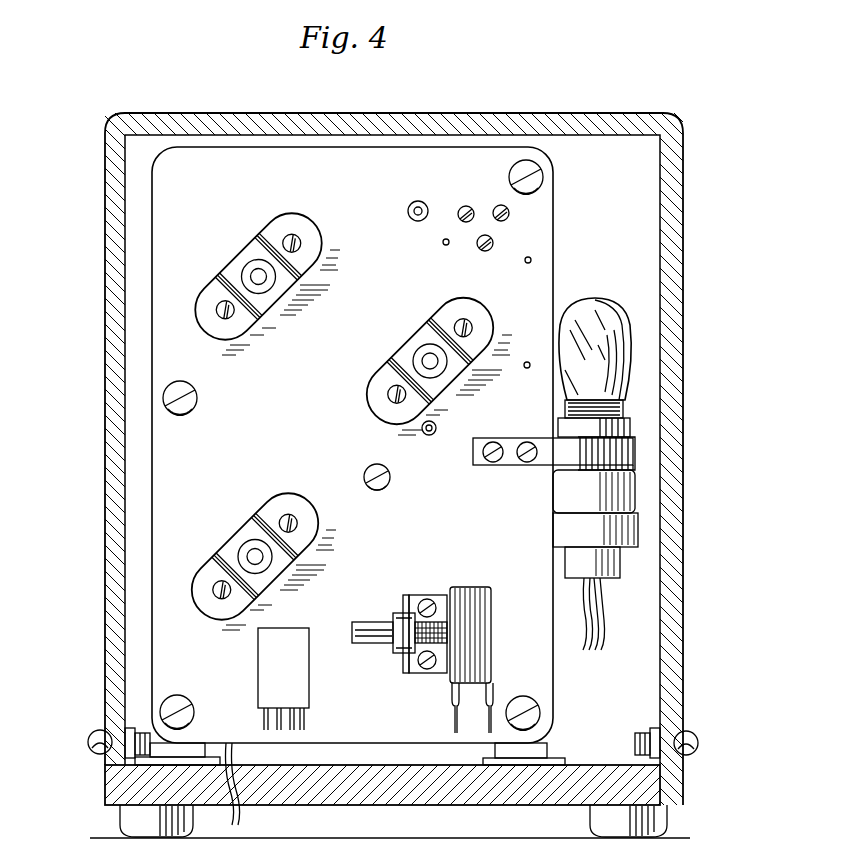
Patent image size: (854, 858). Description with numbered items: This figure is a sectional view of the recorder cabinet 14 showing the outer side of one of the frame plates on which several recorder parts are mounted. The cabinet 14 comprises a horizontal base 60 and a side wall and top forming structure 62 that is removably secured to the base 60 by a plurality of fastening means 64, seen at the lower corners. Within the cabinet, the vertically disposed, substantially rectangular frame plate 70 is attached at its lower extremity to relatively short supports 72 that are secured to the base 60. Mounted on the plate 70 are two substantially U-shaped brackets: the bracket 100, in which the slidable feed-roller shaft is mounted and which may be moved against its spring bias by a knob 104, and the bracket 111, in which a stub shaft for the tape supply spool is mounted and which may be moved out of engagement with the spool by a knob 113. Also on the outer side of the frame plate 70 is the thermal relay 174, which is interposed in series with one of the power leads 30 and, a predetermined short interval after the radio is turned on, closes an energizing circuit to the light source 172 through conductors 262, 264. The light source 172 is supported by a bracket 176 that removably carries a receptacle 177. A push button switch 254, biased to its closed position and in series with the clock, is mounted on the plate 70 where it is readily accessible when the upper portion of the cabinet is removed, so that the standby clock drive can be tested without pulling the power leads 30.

The cabinet 14 is at (99, 396).
The side wall and top forming structure 62 is at (307, 120).
The horizontal base 60 is at (420, 795).
The frame plate 70 is at (78, 660).
The supports 72 is at (192, 747).
The fastening means 64 is at (90, 742).
The power leads 30 is at (248, 789).
The U-shaped bracket 100 is at (460, 362).
The knob 104 is at (433, 372).
The U-shaped bracket 111 is at (296, 280).
The knob 113 is at (265, 285).
The light source 172 is at (597, 300).
The thermal relay 174 is at (310, 700).
The bracket 176 is at (633, 455).
The receptacle 177 is at (613, 495).
The push button switch 254 is at (470, 590).
The conductor 262 is at (590, 610).
The conductor 264 is at (599, 633).